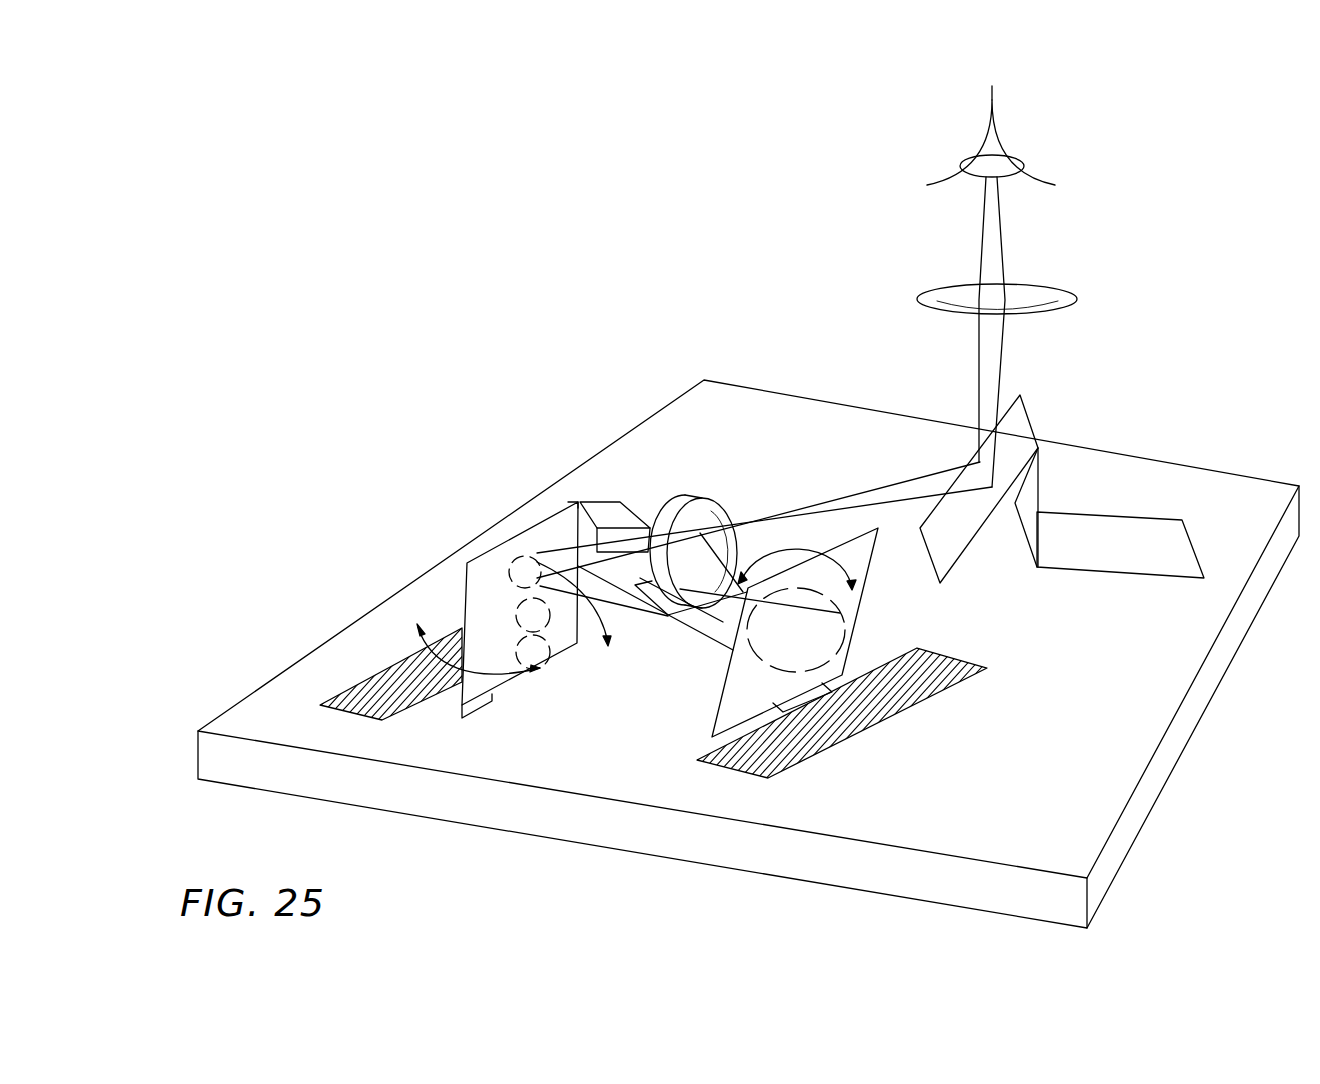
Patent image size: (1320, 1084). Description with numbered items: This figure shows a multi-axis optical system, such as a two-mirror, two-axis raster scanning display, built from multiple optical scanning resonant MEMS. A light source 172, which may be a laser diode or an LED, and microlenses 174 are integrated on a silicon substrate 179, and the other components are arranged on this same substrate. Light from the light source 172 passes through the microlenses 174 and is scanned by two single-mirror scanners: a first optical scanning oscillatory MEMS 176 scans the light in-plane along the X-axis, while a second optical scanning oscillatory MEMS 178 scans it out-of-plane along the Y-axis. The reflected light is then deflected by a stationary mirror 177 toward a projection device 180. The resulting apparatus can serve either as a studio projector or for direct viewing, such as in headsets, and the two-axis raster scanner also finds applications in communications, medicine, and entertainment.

The light source 172 is at (622, 502).
The microlenses 174 is at (694, 536).
The first optical scanning oscillatory MEMS 176 is at (842, 695).
The stationary mirror 177 is at (1062, 474).
The second optical scanning oscillatory MEMS 178 is at (463, 661).
The silicon substrate 179 is at (748, 654).
The projection device 180 is at (1001, 286).